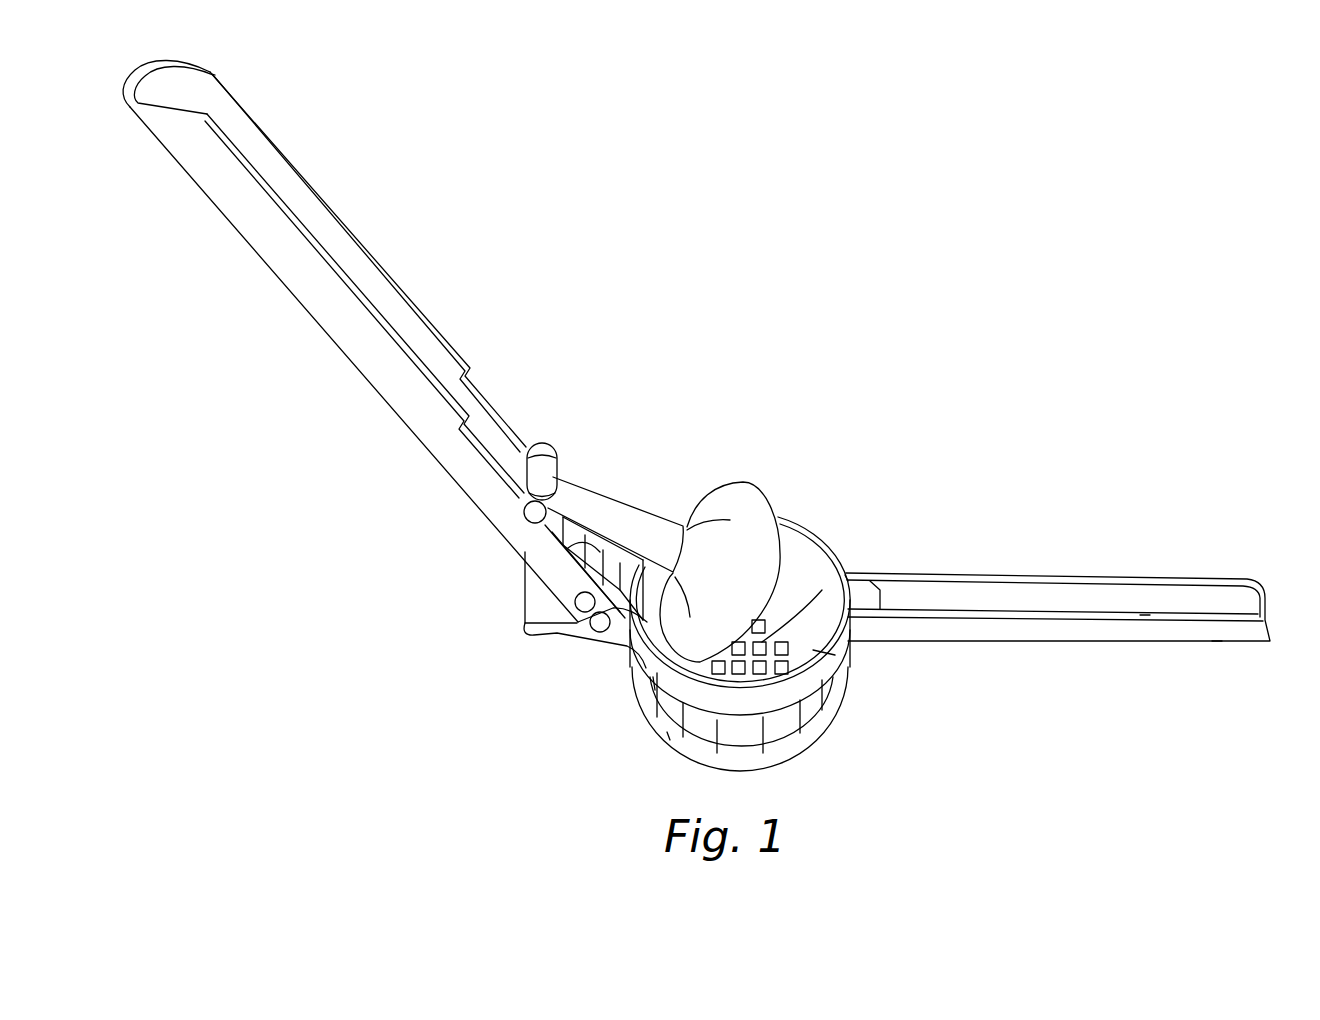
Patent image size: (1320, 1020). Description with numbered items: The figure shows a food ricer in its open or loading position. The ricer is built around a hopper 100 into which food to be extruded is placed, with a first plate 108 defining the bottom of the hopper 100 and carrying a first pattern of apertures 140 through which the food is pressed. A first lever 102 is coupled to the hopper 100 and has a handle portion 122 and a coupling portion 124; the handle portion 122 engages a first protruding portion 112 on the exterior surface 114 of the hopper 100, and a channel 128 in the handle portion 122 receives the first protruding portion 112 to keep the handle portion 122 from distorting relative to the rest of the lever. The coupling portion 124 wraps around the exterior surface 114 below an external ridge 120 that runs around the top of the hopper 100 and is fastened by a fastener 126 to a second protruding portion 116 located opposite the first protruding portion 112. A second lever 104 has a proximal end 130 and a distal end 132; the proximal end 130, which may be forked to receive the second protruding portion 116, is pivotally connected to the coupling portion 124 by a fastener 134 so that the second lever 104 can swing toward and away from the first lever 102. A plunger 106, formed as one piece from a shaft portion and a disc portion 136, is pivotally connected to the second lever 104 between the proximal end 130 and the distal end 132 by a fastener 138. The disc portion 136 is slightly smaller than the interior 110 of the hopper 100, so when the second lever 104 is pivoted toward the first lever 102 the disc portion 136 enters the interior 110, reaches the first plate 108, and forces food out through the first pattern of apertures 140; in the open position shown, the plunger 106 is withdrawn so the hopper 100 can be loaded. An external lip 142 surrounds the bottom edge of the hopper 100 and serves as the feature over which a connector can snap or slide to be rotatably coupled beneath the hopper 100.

The hopper 100 is at (667, 732).
The first lever 102 is at (1017, 583).
The second lever 104 is at (222, 105).
The plunger 106 is at (607, 513).
The first plate 108 is at (840, 577).
The interior 110 is at (787, 537).
The first protruding portion 112 is at (863, 590).
The exterior surface 114 is at (827, 680).
The second protruding portion 116 is at (533, 602).
The external ridge 120 is at (833, 658).
The handle portion 122 is at (1217, 632).
The coupling portion 124 is at (653, 677).
The fastener 126 is at (583, 635).
The channel 128 is at (1145, 620).
The proximal end 130 is at (533, 547).
The distal end 132 is at (213, 74).
The fastener 134 is at (555, 463).
The disc portion 136 is at (742, 492).
The fastener 138 is at (526, 515).
The first pattern of apertures 140 is at (762, 642).
The external lip 142 is at (830, 732).